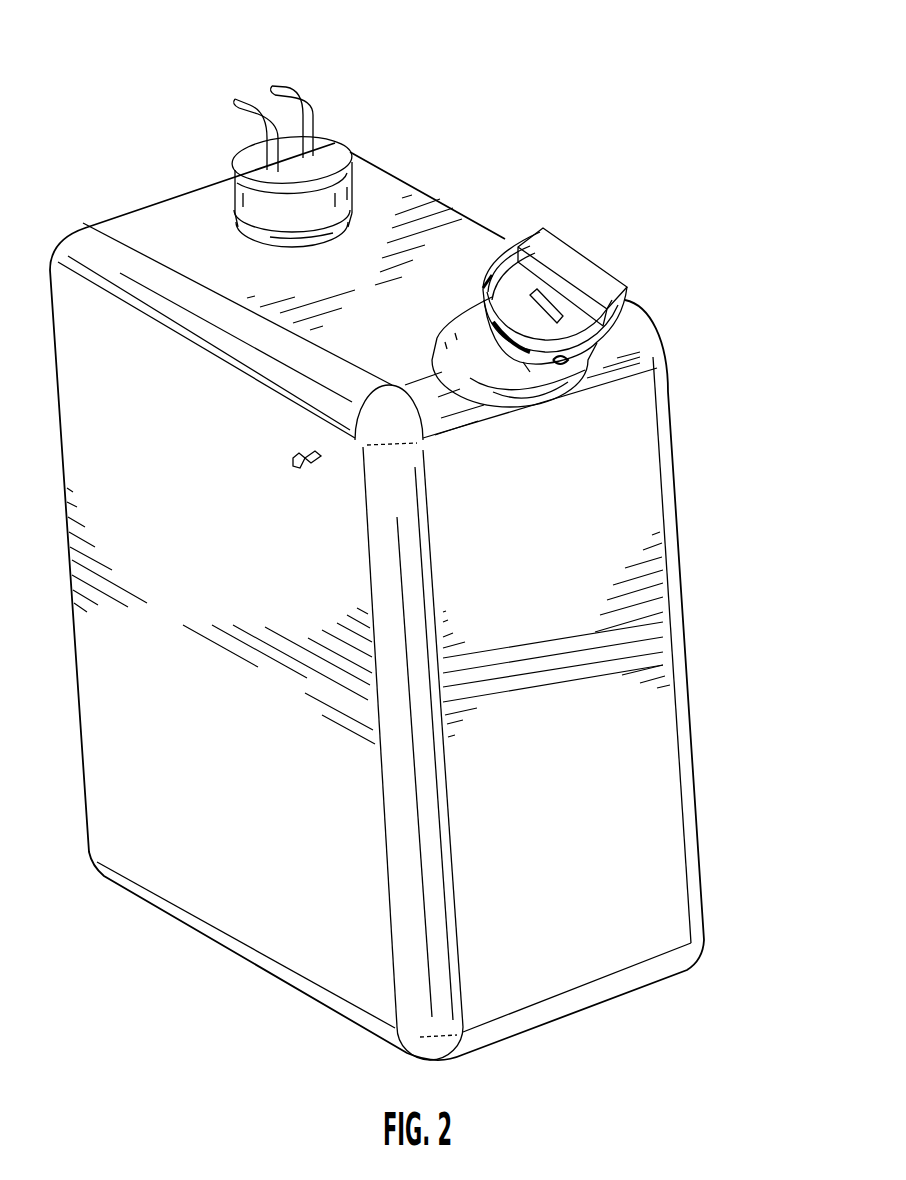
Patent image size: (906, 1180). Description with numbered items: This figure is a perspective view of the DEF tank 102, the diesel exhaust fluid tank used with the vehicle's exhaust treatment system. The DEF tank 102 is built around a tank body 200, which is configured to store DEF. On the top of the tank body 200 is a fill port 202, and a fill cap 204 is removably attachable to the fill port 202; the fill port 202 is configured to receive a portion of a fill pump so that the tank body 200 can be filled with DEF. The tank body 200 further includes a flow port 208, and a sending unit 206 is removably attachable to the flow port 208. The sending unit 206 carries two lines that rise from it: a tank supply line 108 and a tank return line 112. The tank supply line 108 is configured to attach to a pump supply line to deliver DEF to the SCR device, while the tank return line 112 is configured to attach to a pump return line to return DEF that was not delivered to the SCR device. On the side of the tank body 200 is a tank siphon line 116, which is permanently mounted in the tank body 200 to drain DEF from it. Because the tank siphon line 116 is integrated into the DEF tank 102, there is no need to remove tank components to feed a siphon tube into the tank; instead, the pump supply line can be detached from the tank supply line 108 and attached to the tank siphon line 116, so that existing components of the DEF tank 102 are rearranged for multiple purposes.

The DEF tank 102 is at (472, 77).
The tank supply line 108 is at (278, 88).
The tank return line 112 is at (240, 100).
The tank siphon line 116 is at (293, 458).
The tank body 200 is at (671, 392).
The fill port 202 is at (473, 317).
The fill cap 204 is at (567, 252).
The sending unit 206 is at (330, 153).
The flow port 208 is at (237, 227).